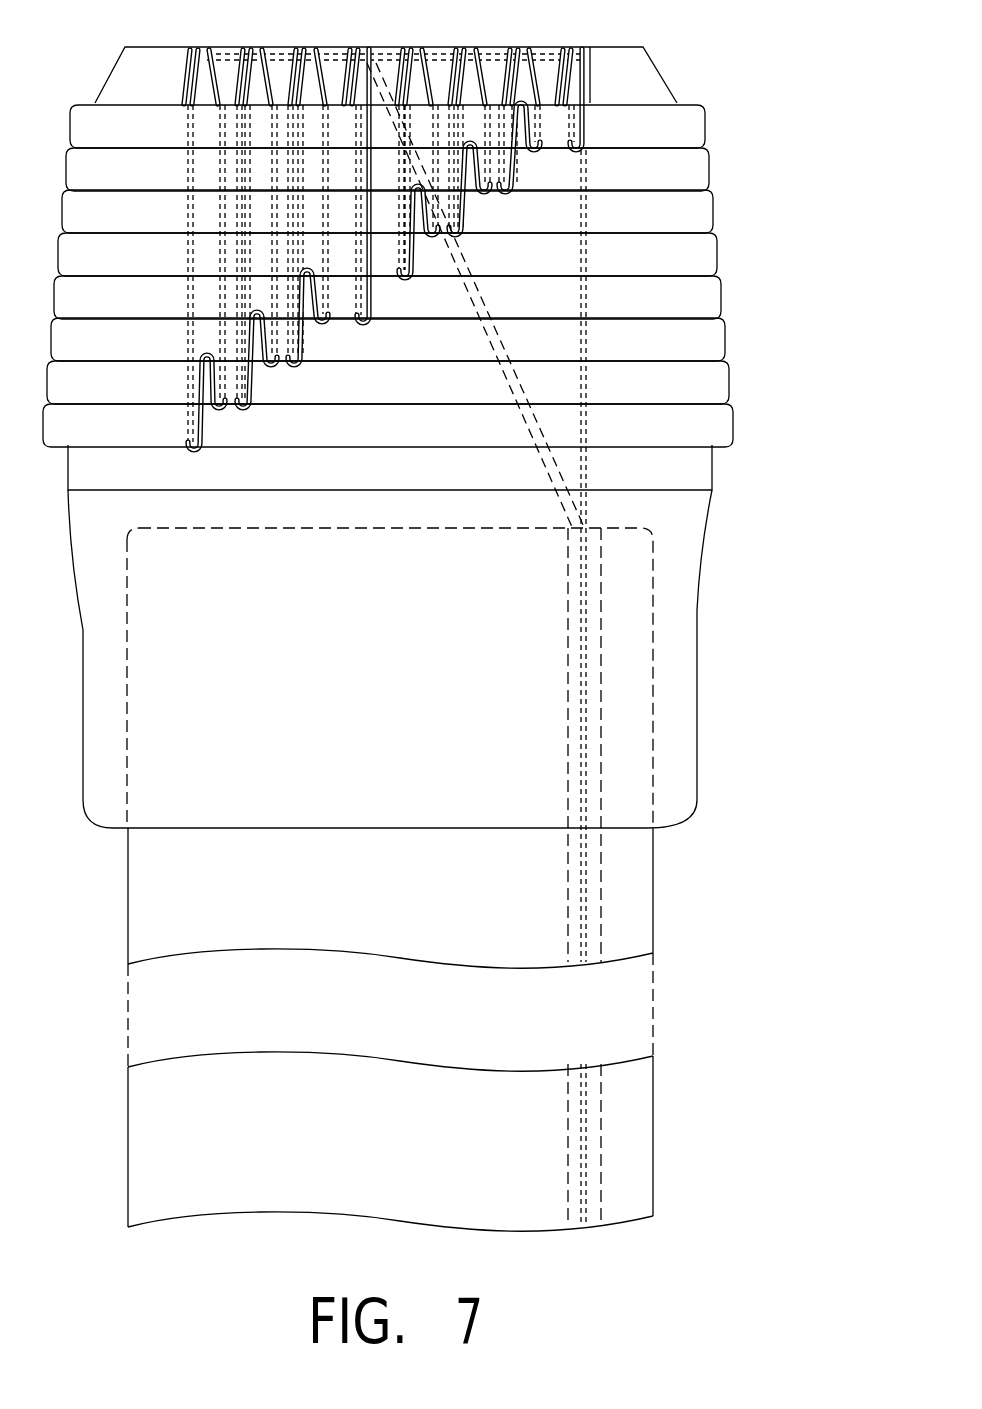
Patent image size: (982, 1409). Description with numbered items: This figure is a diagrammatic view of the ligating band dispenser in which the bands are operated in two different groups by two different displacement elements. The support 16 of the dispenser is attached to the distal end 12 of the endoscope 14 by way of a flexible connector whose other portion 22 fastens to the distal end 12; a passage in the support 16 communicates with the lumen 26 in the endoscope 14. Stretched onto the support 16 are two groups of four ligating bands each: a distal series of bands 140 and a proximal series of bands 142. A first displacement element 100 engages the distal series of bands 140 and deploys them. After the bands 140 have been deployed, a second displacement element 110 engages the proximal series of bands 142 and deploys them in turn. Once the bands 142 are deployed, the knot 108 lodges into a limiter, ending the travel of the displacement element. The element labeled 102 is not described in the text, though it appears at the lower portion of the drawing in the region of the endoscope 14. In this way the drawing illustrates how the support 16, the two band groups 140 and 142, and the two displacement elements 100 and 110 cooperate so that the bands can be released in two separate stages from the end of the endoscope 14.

The knot 108 is at (190, 50).
The distal series of bands 140 is at (730, 103).
The proximal series of bands 142 is at (737, 280).
The displacement element 100 is at (436, 275).
The displacement element 110 is at (545, 457).
The support 16 is at (677, 473).
The distal end 12 is at (653, 658).
The other portion of connector 22 is at (680, 825).
The lumen 26 is at (567, 718).
The endoscope 14 is at (743, 1137).
The lead body 102 is at (630, 1210).